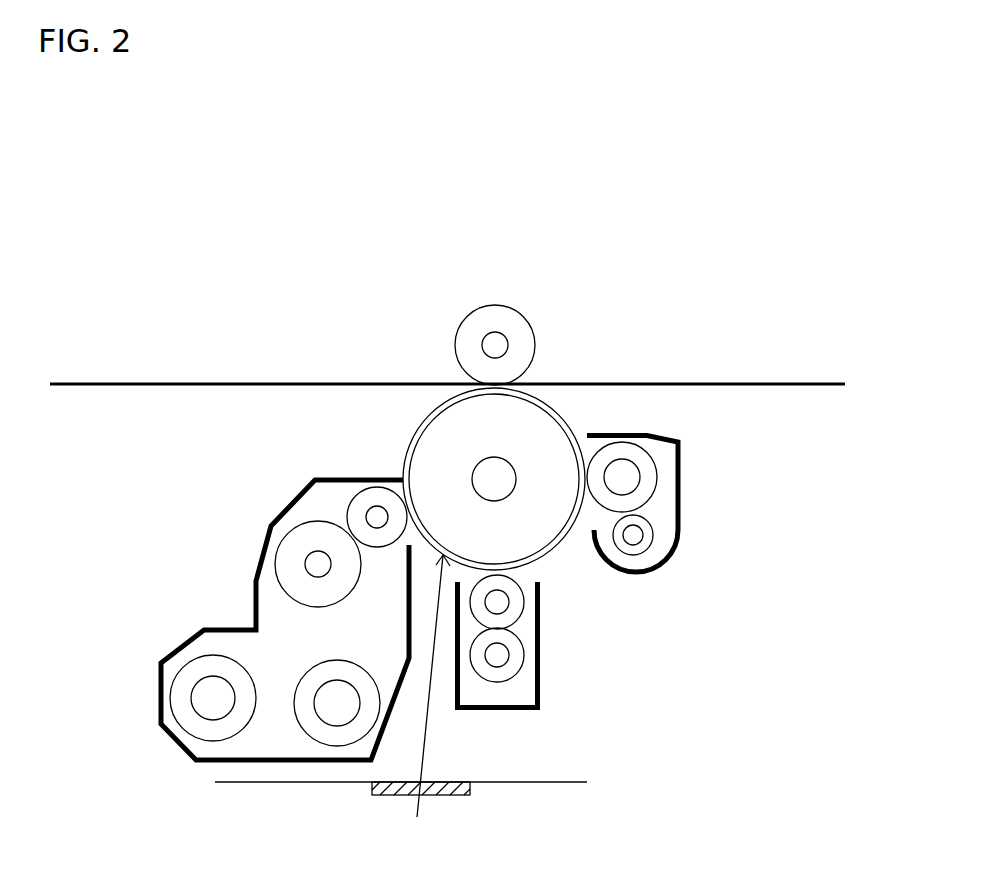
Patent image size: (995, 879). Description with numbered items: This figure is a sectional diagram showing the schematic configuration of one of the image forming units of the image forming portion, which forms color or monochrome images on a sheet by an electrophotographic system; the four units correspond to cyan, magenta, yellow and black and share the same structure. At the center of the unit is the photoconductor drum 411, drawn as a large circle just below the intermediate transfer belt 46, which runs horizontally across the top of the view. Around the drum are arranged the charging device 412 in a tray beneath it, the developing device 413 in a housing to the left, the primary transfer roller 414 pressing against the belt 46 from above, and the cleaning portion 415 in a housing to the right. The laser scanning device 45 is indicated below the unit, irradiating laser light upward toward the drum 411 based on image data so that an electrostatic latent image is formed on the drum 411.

The photoconductor drum 411 is at (418, 427).
The charging device 412 is at (540, 647).
The developing device 413 is at (330, 477).
The primary transfer roller 414 is at (530, 318).
The cleaning portion 415 is at (682, 492).
The laser scanning device 45 is at (553, 782).
The intermediate transfer belt 46 is at (250, 384).